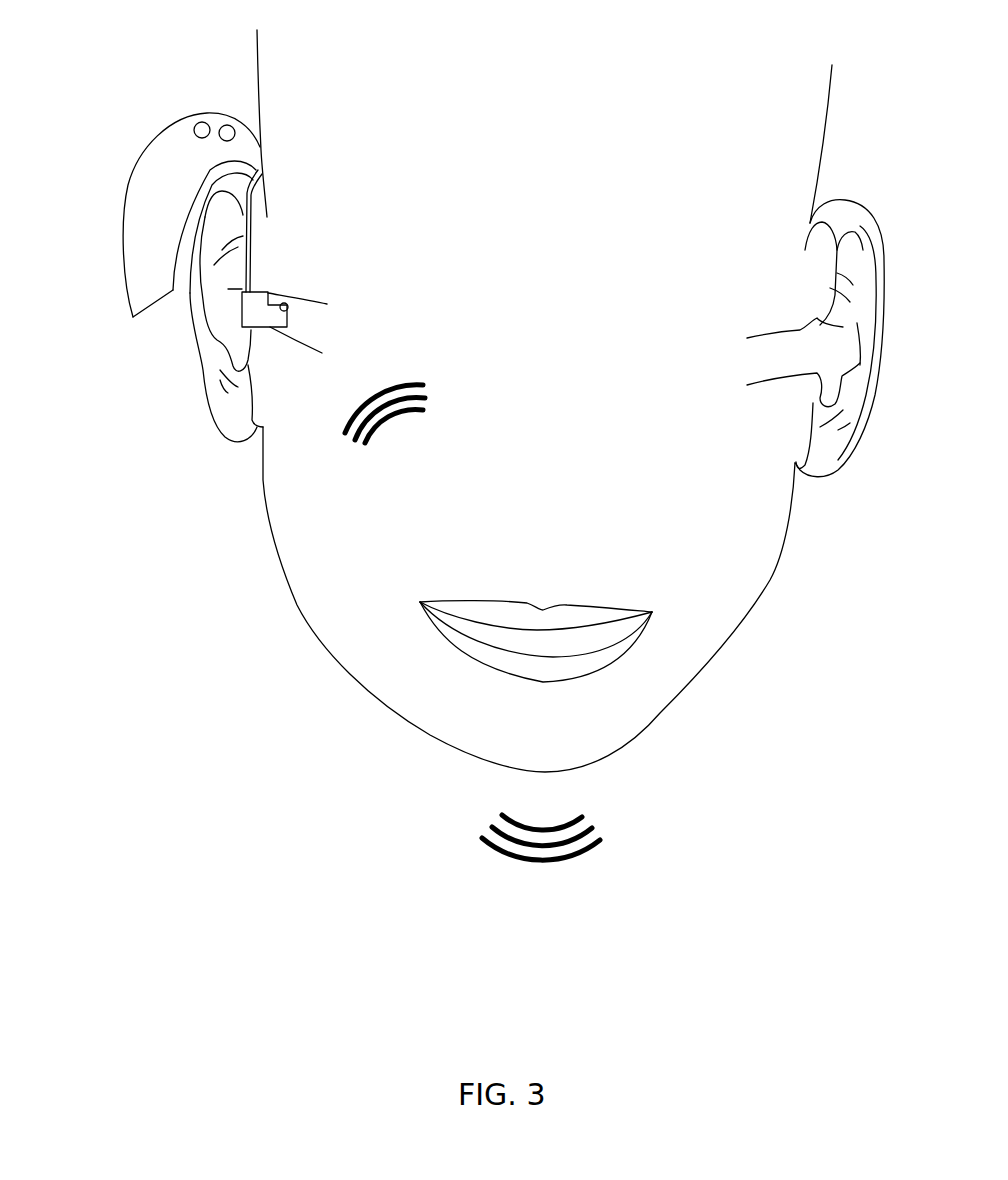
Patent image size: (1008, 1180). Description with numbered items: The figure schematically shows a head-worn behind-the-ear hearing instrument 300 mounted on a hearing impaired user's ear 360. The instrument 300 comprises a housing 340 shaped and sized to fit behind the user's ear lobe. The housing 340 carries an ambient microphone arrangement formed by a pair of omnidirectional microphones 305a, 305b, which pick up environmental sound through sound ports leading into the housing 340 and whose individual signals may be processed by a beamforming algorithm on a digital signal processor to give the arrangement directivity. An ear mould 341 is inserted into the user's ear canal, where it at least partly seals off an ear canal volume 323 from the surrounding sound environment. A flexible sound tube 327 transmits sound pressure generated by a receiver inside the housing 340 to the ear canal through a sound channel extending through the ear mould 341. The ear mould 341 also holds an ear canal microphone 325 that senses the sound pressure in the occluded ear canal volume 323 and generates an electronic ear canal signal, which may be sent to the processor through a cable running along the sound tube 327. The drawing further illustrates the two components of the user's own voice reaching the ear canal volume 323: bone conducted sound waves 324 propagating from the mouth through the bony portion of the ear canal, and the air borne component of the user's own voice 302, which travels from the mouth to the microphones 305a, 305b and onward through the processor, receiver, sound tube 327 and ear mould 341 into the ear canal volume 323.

The BTE hearing instrument 300 is at (202, 215).
The housing 340 is at (117, 240).
The omnidirectional microphone 305a is at (195, 121).
The omnidirectional microphone 305b is at (227, 115).
The flexible sound tube 327 is at (252, 224).
The ear mould 341 is at (270, 293).
The ear canal microphone 325 is at (289, 306).
The ear canal volume 323 is at (327, 346).
The ear 360 is at (223, 403).
The bone conducted sound waves 324 is at (348, 442).
The user's own voice 302 is at (487, 850).